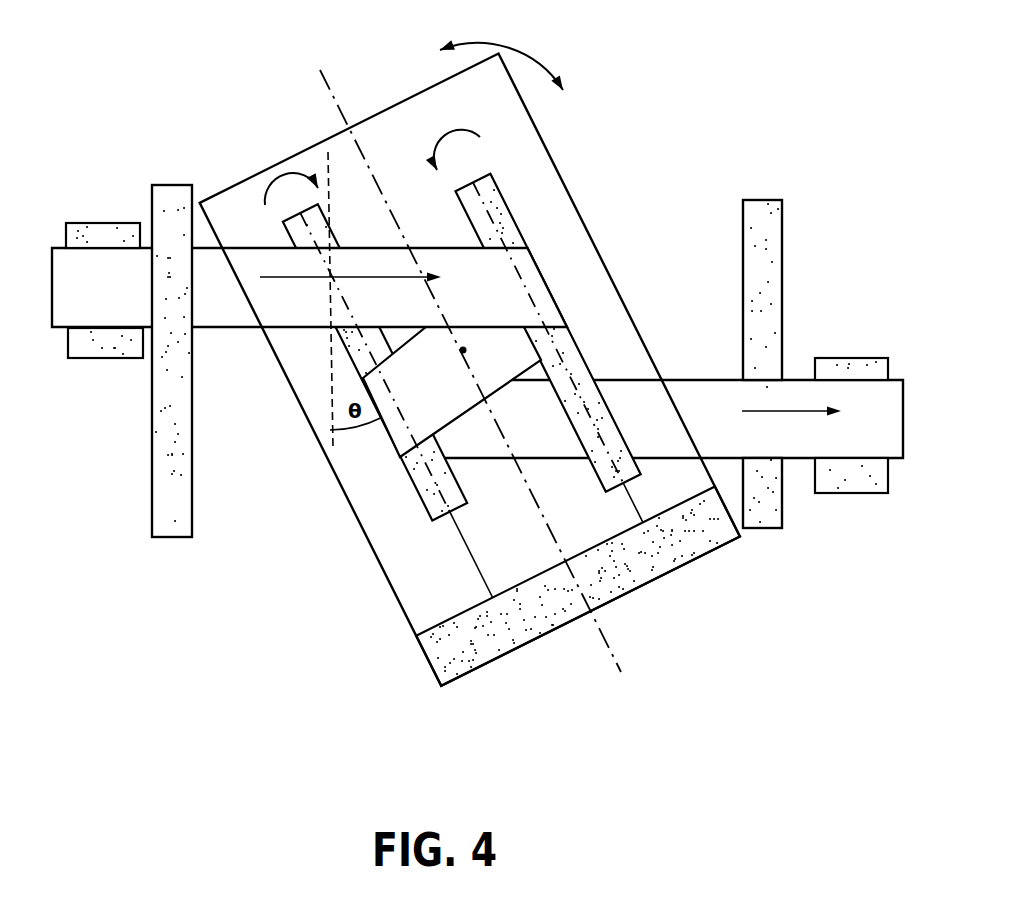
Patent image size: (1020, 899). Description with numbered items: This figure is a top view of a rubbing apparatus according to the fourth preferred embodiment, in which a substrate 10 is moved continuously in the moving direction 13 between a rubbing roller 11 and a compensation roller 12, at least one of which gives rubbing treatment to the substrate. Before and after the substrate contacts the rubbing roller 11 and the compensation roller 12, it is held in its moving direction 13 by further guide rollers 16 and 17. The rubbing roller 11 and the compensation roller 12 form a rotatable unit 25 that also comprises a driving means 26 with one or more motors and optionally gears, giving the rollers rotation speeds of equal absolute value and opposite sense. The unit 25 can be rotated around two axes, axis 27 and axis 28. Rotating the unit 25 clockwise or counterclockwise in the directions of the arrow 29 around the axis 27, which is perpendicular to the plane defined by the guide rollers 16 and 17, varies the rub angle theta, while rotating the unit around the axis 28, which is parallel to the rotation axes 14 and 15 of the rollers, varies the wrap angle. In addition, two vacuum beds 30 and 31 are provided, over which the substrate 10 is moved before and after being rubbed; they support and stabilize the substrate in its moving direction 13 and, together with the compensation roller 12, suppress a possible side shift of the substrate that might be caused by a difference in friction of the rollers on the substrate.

The substrate 10 is at (309, 166).
The rubbing roller 11 is at (290, 203).
The compensation roller 12 is at (472, 182).
The moving direction 13 is at (262, 263).
The rotation axis of rubbing roller 14 is at (478, 543).
The rotation axis of compensation roller 15 is at (637, 487).
The guide roller 16 is at (165, 503).
The guide roller 17 is at (760, 500).
The rotatable unit 25 is at (365, 543).
The driving means 26 is at (420, 630).
The axis 27 is at (463, 350).
The axis 28 is at (613, 643).
The arrow 29 is at (553, 58).
The vacuum bed 30 is at (93, 215).
The vacuum bed 31 is at (855, 473).